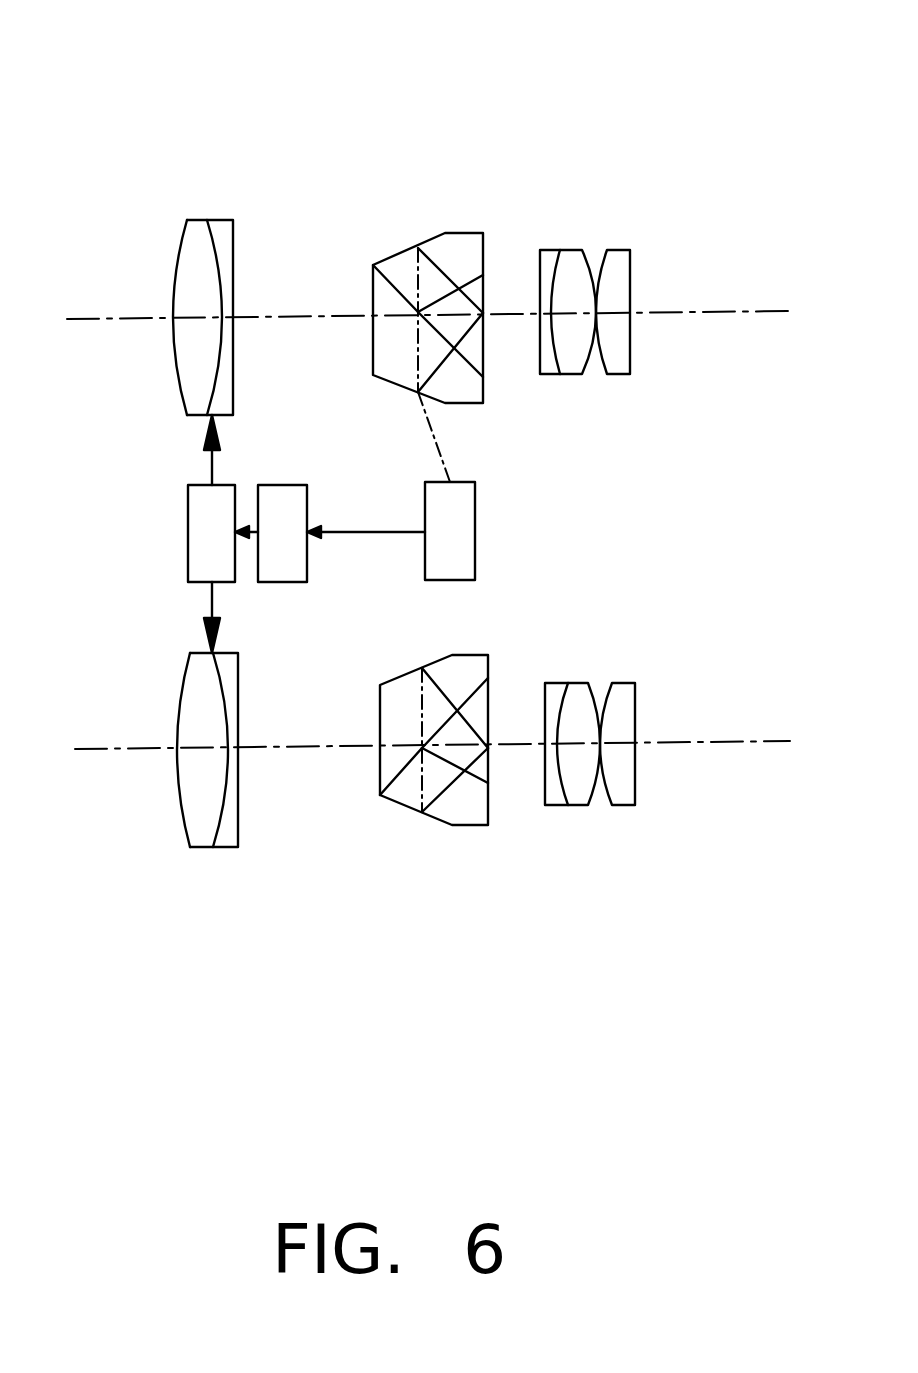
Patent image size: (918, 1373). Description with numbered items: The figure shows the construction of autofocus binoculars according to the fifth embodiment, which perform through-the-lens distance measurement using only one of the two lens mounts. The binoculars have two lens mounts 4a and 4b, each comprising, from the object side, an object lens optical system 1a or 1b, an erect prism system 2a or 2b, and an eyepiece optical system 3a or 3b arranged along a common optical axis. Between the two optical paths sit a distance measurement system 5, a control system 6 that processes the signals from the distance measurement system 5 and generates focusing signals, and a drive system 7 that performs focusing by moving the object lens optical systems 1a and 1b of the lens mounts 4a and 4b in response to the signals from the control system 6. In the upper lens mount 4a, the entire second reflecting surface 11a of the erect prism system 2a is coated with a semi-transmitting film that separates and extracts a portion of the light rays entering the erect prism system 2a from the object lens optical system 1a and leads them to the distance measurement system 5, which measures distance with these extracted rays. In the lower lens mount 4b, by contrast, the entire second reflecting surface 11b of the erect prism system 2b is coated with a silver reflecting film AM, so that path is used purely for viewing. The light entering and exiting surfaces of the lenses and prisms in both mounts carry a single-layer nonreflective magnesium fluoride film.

The object lens optical system 1a is at (252, 200).
The erect prism system 2a is at (495, 198).
The eyepiece optical system 3a is at (650, 195).
The lens mount 4a is at (648, 95).
The object lens optical system 1b is at (260, 868).
The erect prism system 2b is at (503, 867).
The eyepiece optical system 3b is at (657, 865).
The lens mount 4b is at (658, 963).
The distance measurement system 5 is at (446, 486).
The control system 6 is at (341, 533).
The drive system 7 is at (223, 534).
The second reflecting surface 11a is at (384, 377).
The second reflecting surface 11b is at (393, 677).
The silver reflecting film AM is at (408, 672).